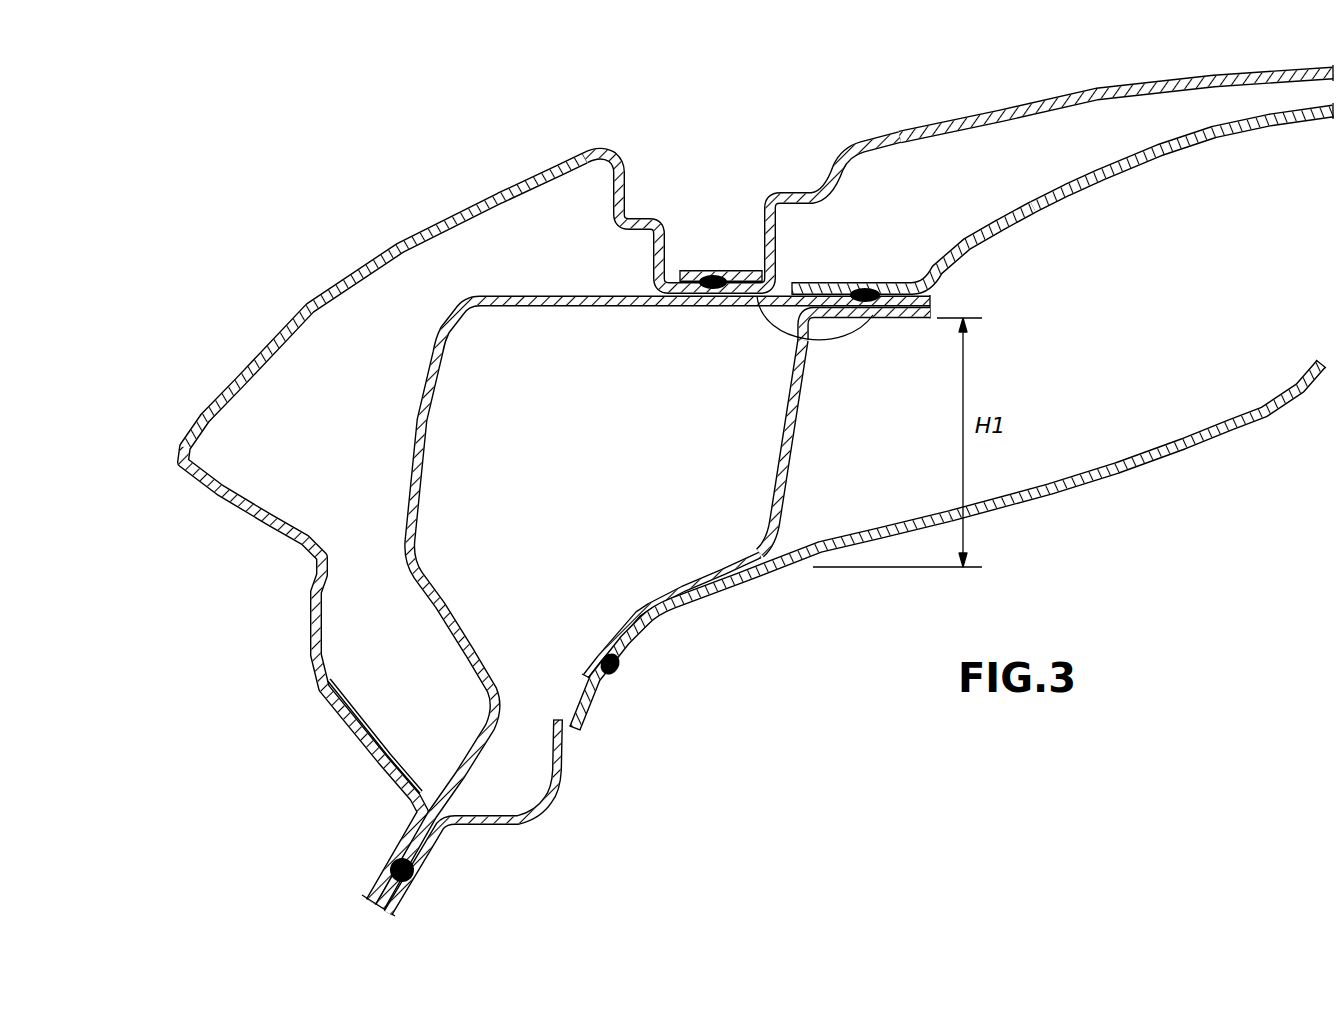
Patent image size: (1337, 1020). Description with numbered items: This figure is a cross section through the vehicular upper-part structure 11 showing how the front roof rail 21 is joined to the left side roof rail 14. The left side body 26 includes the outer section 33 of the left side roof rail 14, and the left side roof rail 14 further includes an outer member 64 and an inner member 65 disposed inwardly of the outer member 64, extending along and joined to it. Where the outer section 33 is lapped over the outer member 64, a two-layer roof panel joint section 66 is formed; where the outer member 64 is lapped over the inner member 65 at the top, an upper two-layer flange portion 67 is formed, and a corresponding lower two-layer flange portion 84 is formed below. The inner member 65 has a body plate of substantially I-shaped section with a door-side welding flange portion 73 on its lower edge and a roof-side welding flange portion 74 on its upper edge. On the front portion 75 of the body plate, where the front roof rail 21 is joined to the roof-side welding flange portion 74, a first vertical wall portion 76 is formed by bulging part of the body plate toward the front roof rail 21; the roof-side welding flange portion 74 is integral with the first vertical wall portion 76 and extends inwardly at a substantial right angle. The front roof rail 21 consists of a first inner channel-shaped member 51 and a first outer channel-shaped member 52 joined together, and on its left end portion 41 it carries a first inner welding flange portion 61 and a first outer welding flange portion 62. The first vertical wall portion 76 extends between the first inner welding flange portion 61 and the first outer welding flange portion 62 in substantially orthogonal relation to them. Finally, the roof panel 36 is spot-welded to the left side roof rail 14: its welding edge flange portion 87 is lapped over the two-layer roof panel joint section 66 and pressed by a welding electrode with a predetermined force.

The vehicular upper-part structure 11 is at (822, 118).
The left side roof rail 14 is at (767, 108).
The front roof rail 21 is at (1243, 183).
The left side body 26 is at (277, 637).
The outer section 33 is at (322, 296).
The roof panel 36 is at (1117, 88).
The left end portion 41 is at (933, 262).
The first inner channel-shaped member 51 is at (1180, 440).
The first outer channel-shaped member 52 is at (1163, 158).
The first inner welding flange portion 61 is at (635, 652).
The first outer welding flange portion 62 is at (818, 283).
The outer member 64 is at (453, 298).
The inner member 65 is at (660, 597).
The two-layer roof panel joint section 66 is at (668, 272).
The upper two-layer flange portion 67 is at (752, 281).
The door-side welding flange portion 73 is at (410, 880).
The roof-side welding flange portion 74 is at (917, 319).
The front portion 75 is at (732, 572).
The first vertical wall portion 76 is at (792, 446).
The lower two-layer flange portion 84 is at (443, 830).
The welding edge flange portion 87 is at (766, 205).